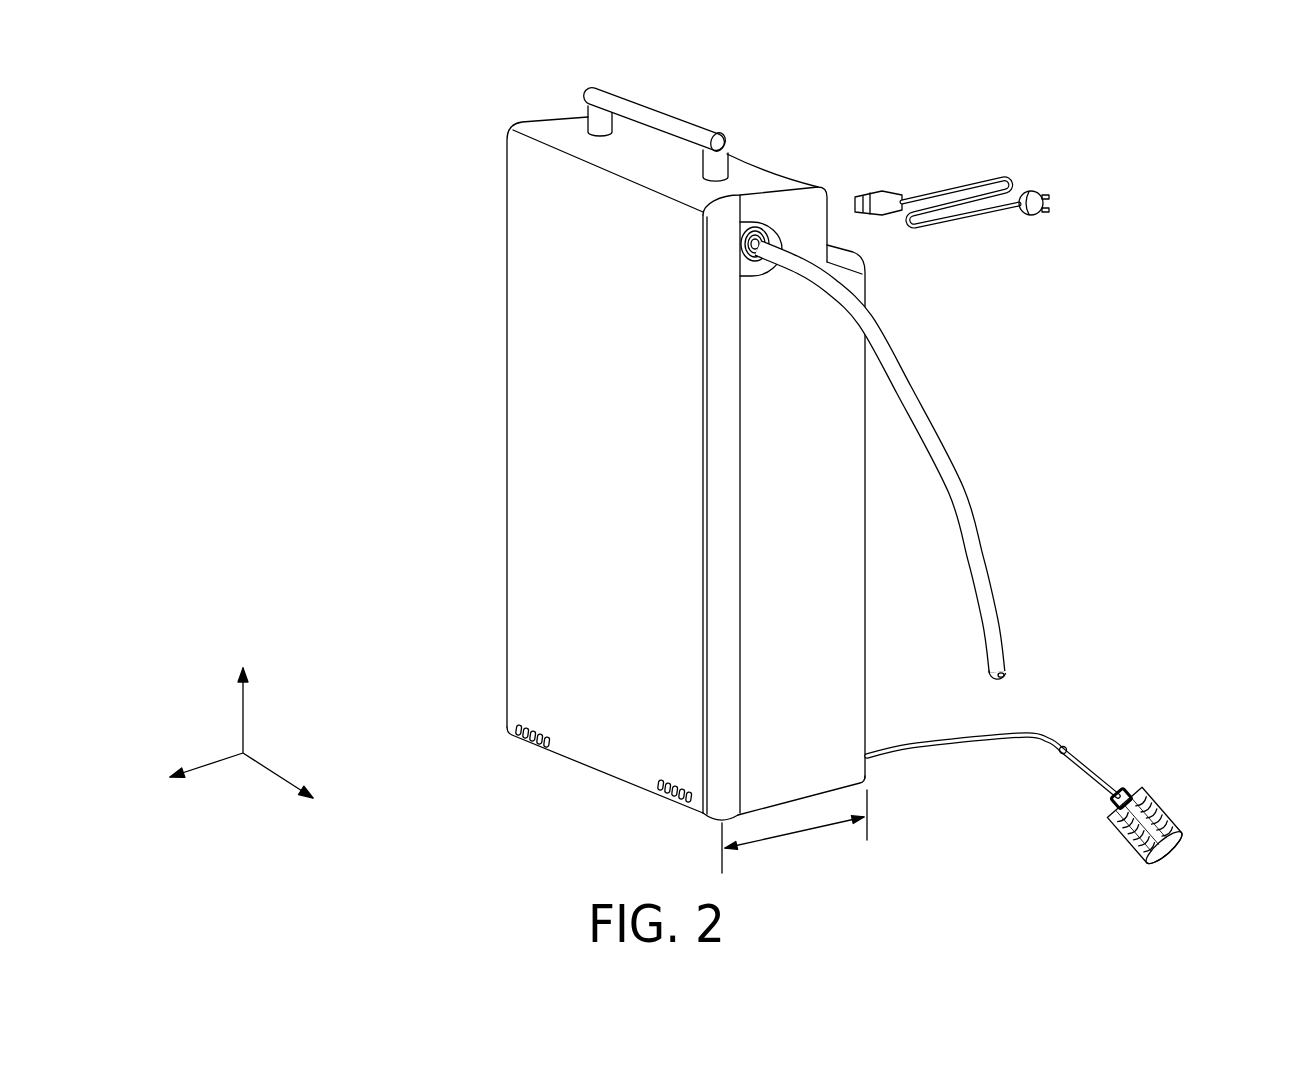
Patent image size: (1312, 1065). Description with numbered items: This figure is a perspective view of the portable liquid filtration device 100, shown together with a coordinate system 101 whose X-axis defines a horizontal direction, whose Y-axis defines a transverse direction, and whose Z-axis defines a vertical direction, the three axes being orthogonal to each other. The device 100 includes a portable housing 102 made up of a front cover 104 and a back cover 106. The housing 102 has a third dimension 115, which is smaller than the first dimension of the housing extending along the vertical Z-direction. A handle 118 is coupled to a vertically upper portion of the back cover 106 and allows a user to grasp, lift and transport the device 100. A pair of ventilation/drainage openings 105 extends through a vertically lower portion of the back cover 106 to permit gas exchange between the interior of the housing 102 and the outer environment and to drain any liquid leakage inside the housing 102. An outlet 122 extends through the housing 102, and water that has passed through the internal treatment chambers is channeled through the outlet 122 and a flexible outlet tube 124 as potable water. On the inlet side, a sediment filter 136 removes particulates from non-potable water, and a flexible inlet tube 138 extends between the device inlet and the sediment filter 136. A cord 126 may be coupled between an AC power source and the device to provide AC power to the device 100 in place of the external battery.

The portable liquid filtration device 100 is at (842, 458).
The coordinate system 101 is at (185, 712).
The portable housing 102 is at (752, 458).
The front cover 104 is at (838, 597).
The ventilation/drainage openings 105 is at (662, 790).
The back cover 106 is at (543, 212).
The third dimension 115 is at (803, 833).
The handle 118 is at (690, 113).
The outlet 122 is at (767, 228).
The flexible outlet tube 124 is at (955, 470).
The cord 126 is at (1037, 187).
The sediment filter 136 is at (1168, 810).
The flexible inlet tube 138 is at (932, 748).